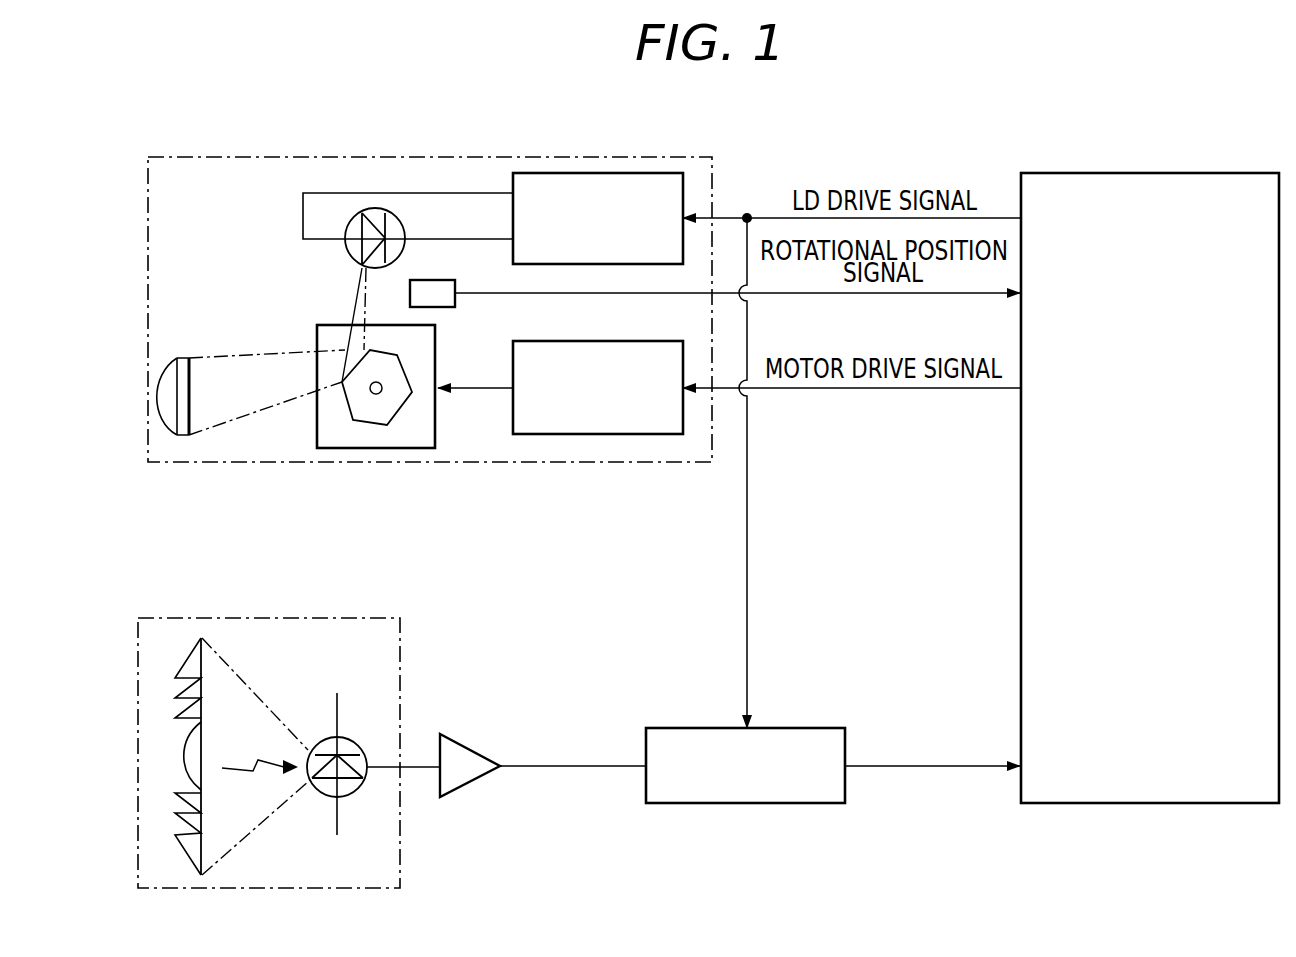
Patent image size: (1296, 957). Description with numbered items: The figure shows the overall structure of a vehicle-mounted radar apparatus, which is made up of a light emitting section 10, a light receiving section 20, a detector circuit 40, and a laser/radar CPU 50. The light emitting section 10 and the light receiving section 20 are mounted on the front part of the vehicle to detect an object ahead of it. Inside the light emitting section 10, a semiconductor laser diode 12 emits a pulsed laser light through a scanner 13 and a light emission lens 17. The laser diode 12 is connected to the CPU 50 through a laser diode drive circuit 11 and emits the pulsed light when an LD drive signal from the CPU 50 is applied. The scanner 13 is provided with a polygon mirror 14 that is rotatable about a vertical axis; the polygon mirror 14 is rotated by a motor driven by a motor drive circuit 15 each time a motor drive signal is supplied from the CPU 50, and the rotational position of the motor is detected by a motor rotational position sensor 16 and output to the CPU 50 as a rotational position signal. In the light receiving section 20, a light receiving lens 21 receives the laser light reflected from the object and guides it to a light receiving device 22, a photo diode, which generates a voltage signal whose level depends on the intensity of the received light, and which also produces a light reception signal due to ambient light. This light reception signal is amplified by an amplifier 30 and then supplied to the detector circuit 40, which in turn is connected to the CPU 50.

The light emitting section 10 is at (270, 157).
The laser diode drive circuit 11 is at (652, 173).
The semiconductor laser diode 12 is at (345, 250).
The scanner 13 is at (357, 449).
The polygon mirror 14 is at (401, 410).
The motor drive circuit 15 is at (632, 342).
The motor rotational position sensor 16 is at (456, 308).
The light emission lens 17 is at (172, 360).
The light receiving section 20 is at (356, 618).
The light receiving lens 21 is at (191, 660).
The light receiving device 22 is at (351, 742).
The amplifier 30 is at (463, 741).
The detector circuit 40 is at (828, 728).
The laser/radar CPU 50 is at (1215, 173).